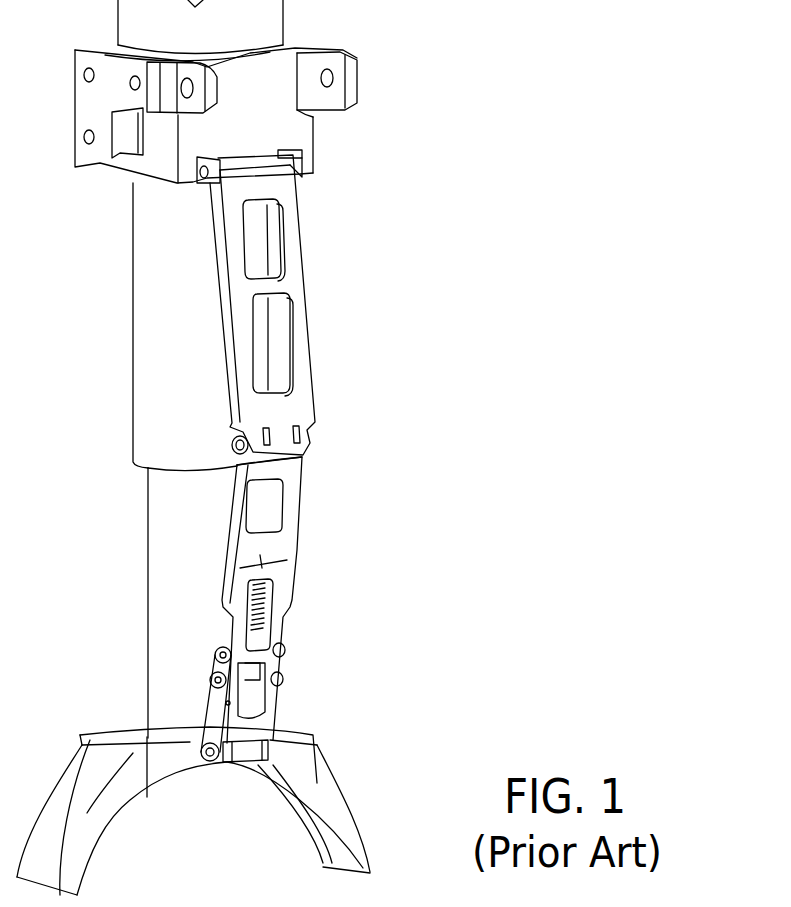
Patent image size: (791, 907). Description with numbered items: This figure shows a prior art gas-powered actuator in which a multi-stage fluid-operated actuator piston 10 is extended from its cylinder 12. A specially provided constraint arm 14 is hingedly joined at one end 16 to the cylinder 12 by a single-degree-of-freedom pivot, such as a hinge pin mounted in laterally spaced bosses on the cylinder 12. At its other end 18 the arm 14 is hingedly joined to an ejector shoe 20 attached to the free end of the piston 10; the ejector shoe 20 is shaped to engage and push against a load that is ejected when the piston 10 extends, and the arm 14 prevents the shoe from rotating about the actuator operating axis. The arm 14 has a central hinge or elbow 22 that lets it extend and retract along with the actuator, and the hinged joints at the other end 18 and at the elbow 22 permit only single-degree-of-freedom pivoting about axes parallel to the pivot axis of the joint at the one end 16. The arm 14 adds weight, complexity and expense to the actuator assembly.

The multi-stage fluid-operated actuator piston 10 is at (160, 577).
The cylinder 12 is at (127, 30).
The constraint arm 14 is at (327, 323).
The one end of the constraint arm 16 is at (283, 193).
The other end of the constraint arm 18 is at (262, 723).
The ejector shoe 20 is at (77, 773).
The central hinge or elbow 22 is at (306, 432).